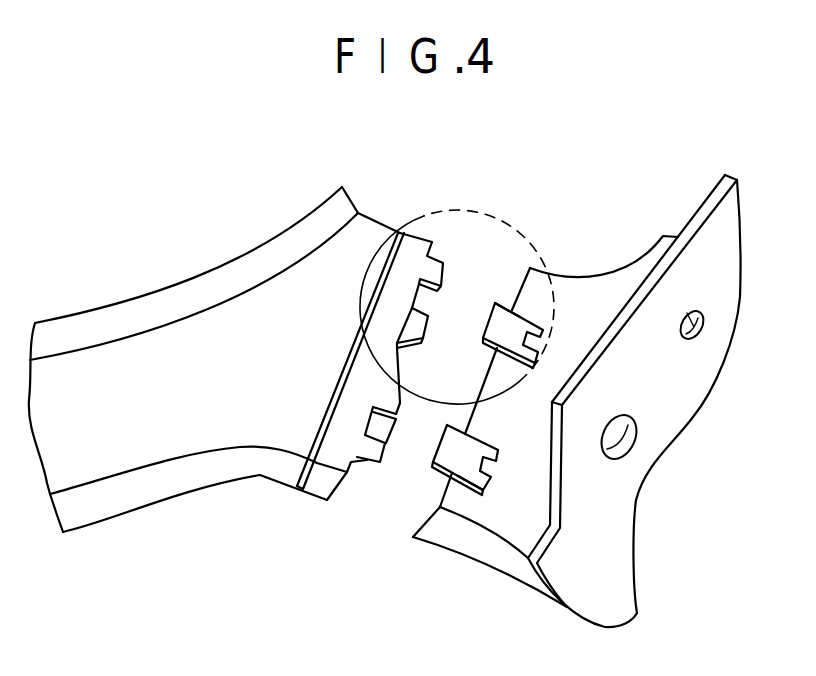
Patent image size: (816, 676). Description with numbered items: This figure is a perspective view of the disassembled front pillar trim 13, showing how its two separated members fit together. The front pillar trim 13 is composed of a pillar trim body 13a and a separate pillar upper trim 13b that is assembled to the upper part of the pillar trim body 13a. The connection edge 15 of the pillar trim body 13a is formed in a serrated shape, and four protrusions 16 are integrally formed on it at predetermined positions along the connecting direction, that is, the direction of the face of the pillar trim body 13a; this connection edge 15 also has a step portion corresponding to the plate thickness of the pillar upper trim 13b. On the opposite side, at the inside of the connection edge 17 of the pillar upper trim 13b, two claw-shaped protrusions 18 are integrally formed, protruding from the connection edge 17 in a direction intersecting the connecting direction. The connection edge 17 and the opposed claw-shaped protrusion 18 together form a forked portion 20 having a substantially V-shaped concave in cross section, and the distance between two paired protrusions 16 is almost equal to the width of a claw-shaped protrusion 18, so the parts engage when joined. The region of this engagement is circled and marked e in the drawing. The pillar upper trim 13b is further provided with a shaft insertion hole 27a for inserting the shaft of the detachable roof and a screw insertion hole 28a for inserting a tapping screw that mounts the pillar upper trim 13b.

The front pillar trim 13 is at (388, 195).
The pillar trim body 13a is at (182, 433).
The pillar upper trim 13b is at (678, 418).
The connection edge 15 is at (357, 413).
The protrusions 16 is at (412, 307).
The connection edge 17 is at (497, 380).
The claw-shaped protrusions 18 is at (515, 318).
The forked portion 20 is at (503, 298).
The shaft insertion hole 27a is at (630, 463).
The screw insertion hole 28a is at (687, 313).
The enlarged detail region e is at (499, 223).